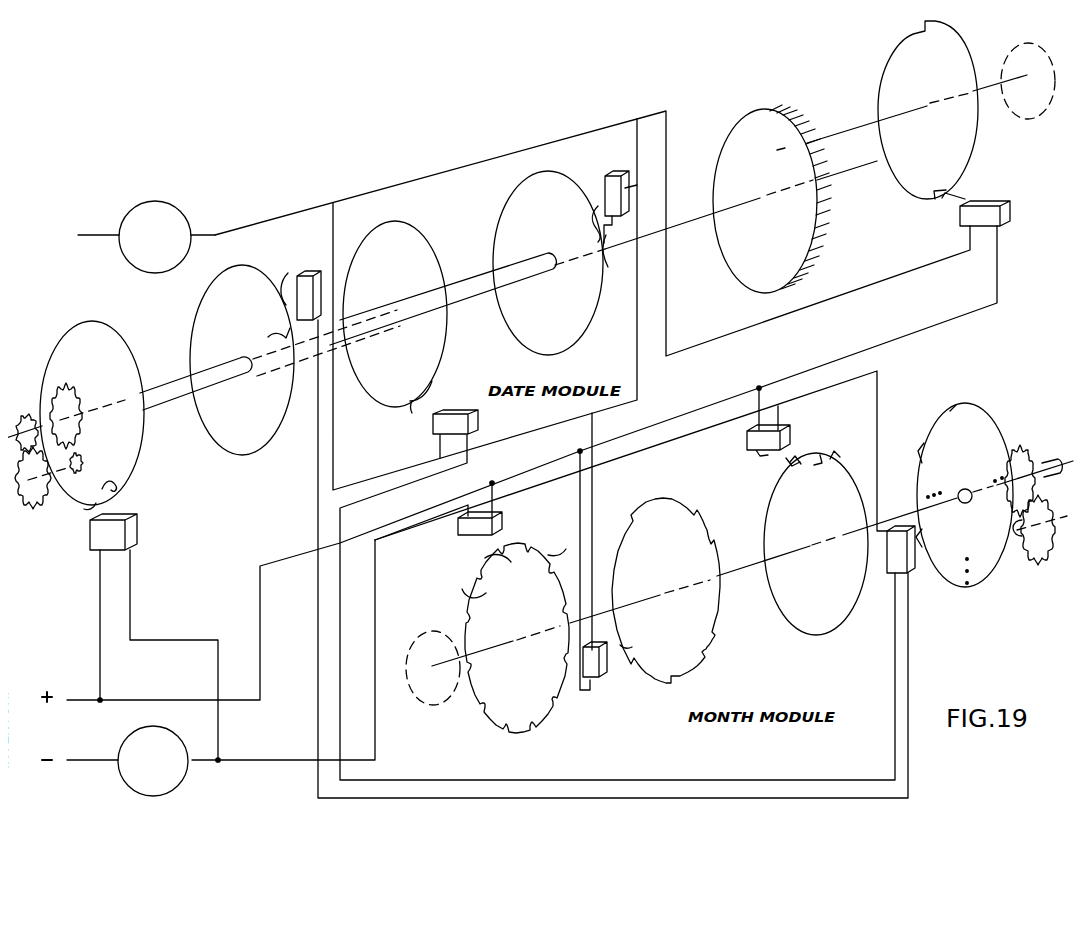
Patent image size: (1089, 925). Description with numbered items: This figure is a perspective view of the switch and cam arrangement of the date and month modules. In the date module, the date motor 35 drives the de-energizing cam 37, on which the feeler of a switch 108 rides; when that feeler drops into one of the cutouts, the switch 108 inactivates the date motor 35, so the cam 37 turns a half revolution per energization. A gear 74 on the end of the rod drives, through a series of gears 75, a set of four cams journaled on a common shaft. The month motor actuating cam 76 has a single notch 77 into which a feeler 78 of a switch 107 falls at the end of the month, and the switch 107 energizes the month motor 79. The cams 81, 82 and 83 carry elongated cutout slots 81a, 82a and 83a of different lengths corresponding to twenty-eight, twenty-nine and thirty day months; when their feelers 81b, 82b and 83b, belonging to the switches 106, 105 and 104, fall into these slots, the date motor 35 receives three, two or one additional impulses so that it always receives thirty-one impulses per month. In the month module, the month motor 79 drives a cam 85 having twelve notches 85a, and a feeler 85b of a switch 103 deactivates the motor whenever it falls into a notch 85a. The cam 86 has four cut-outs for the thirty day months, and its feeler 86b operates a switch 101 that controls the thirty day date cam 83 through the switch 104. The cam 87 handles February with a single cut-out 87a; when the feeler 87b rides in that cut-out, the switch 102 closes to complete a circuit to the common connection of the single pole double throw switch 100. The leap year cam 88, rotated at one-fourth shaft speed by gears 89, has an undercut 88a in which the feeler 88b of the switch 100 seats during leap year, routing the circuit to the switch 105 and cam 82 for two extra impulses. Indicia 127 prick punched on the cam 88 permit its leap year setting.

The date motor 35 is at (183, 212).
The de-energizing cam 37 is at (888, 61).
The gear 74 is at (742, 112).
The series of gears 75 is at (33, 394).
The month motor actuating cam 76 is at (92, 318).
The notch 77 is at (118, 489).
The feeler 78 is at (84, 506).
The month motor 79 is at (175, 737).
The cam 81 is at (196, 317).
The elongated cutout slot 81a is at (273, 330).
The feeler 81b is at (288, 272).
The cam 82 is at (438, 264).
The cutout slot 82a is at (436, 378).
The feeler 82b is at (410, 410).
The cam 83 is at (502, 218).
The cutout slot 83a is at (592, 216).
The feeler 83b is at (620, 260).
The cam 85 is at (544, 728).
The notches 85a is at (560, 552).
The feeler 85b is at (486, 554).
The cam 86 is at (672, 500).
The feeler 86b is at (630, 642).
The cam 87 is at (804, 518).
The cut-out 87a is at (822, 454).
The feeler 87b is at (788, 458).
The leap year cam 88 is at (976, 410).
The undercut 88a is at (918, 464).
The feeler 88b is at (920, 530).
The gears 89 is at (1040, 442).
The single pole double throw switch 100 is at (886, 544).
The switch 101 is at (604, 678).
The switch 102 is at (748, 436).
The switch 103 is at (502, 516).
The switch 104 is at (613, 172).
The switch 105 is at (480, 422).
The switch 106 is at (306, 272).
The switch 107 is at (138, 535).
The switch 108 is at (1002, 213).
The indicia 127 is at (956, 406).